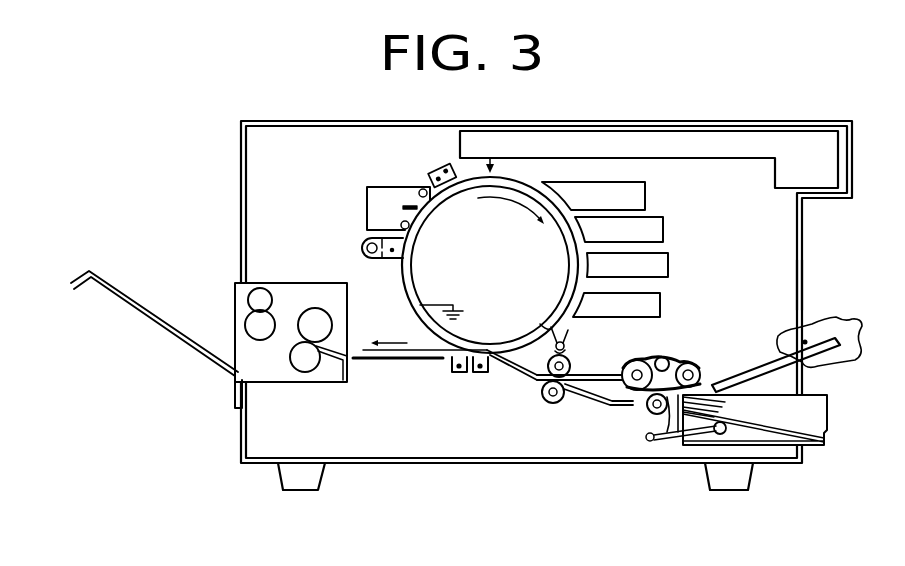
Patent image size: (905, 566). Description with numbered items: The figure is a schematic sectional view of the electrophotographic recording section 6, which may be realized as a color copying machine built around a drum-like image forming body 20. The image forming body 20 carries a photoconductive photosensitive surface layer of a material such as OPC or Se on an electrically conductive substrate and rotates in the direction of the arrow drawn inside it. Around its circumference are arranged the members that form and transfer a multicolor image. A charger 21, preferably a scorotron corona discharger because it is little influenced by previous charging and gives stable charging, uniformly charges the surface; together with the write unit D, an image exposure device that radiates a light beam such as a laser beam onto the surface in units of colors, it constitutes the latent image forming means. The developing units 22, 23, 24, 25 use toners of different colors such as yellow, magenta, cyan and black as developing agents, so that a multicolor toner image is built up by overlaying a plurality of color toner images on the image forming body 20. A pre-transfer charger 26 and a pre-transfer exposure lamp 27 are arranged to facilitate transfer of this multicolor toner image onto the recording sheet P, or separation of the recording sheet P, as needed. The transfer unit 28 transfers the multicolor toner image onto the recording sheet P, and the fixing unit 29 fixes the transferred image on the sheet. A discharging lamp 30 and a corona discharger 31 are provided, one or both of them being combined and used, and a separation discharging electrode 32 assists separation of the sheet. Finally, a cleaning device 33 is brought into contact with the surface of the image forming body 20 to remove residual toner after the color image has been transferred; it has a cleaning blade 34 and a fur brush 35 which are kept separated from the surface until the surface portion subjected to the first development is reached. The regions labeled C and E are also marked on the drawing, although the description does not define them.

The electrophotographic recording section 6 is at (388, 527).
The image forming body 20 is at (450, 323).
The charger 21 is at (440, 164).
The developing unit 22 is at (648, 197).
The developing unit 23 is at (665, 228).
The developing unit 24 is at (670, 262).
The developing unit 25 is at (662, 300).
The pre-transfer charger 26 is at (568, 329).
The pre-transfer exposure lamp 27 is at (568, 350).
The transfer unit 28 is at (483, 373).
The fixing unit 29 is at (235, 305).
The discharging lamp 30 is at (366, 246).
The corona discharger 31 is at (393, 262).
The separation discharging electrode 32 is at (455, 375).
The cleaning device 33 is at (373, 186).
The cleaning blade 34 is at (412, 205).
The fur brush 35 is at (403, 224).
The recording sheet P is at (417, 349).
The write unit D is at (778, 199).
The main body section C is at (762, 285).
The manual paper feed section E is at (773, 381).